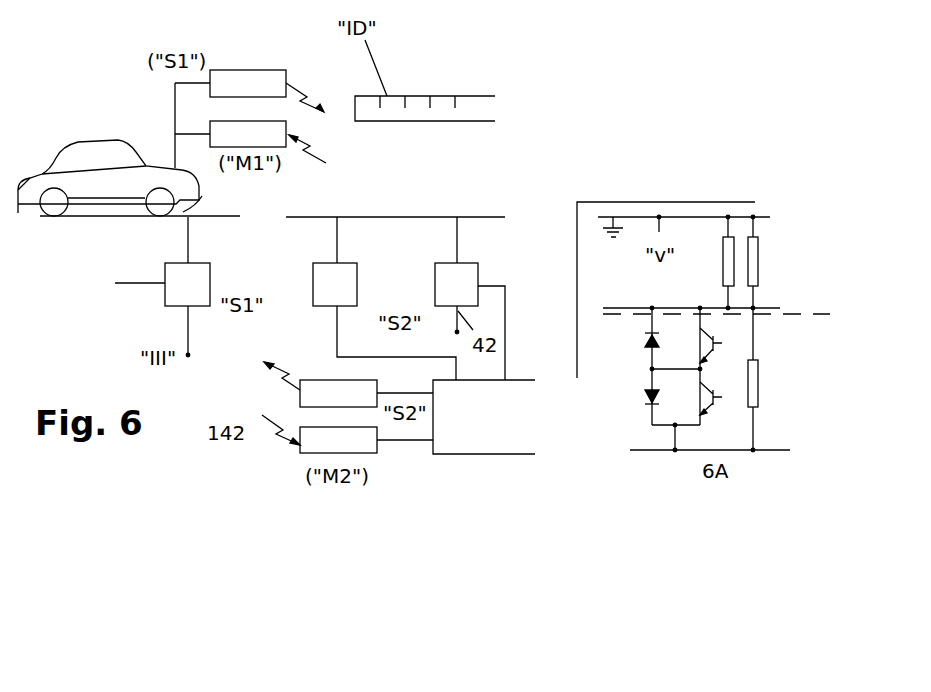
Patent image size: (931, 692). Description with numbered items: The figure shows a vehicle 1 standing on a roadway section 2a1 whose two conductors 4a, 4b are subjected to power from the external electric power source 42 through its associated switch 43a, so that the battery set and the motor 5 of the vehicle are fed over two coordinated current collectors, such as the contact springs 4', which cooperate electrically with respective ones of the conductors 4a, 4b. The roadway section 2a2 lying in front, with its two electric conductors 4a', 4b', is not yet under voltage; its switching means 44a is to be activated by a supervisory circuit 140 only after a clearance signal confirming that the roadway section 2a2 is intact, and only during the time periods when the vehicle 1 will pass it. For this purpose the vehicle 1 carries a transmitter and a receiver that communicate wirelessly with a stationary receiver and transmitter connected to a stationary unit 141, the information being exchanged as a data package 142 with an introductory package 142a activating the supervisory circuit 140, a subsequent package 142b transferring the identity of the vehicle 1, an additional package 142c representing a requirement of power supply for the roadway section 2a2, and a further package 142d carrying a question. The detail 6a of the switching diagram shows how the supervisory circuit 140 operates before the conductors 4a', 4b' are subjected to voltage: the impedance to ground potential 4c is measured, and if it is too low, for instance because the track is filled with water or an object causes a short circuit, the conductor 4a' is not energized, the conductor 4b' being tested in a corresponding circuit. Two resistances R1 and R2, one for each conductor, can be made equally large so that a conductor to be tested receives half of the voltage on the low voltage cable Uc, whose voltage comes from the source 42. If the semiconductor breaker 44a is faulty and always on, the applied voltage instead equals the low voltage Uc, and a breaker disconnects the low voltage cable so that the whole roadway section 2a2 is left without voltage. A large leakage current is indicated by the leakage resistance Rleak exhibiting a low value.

In FIG. 6, the vehicle 1 is at (136, 187).
In FIG. 6, the motor 5 is at (99, 195).
In FIG. 6, the conductor 4a is at (140, 230).
In FIG. 6, the conductor 4b is at (395, 205).
In FIG. 6, the contact spring 4' is at (232, 199).
In FIG. 6, the conductor 4a' is at (342, 205).
In FIG. 6A, the conductor 4a' is at (691, 294).
In FIG. 6A, the conductor 4b' is at (721, 332).
In FIG. 6, the roadway section 2a1 is at (64, 218).
In FIG. 6, the roadway section 2a2 is at (423, 219).
In FIG. 6, the switch 43a is at (184, 261).
In FIG. 6, the external electric power source 42 is at (204, 337).
In FIG. 6A, the external electric power source 42 is at (694, 461).
In FIG. 6, the supervisory circuit 140 is at (357, 287).
In FIG. 6A, the supervisory circuit 140 is at (628, 202).
In FIG. 6, the switching means 44a is at (480, 298).
In FIG. 6, the central controller 141 is at (503, 456).
In FIG. 6, the data package 142 is at (435, 97).
In FIG. 6, the introductory package 142a is at (362, 95).
In FIG. 6, the data package 142b is at (391, 113).
In FIG. 6, the data package 142c is at (421, 96).
In FIG. 6, the data package 142d is at (444, 96).
In FIG. 6A, the ground potential 4c is at (762, 216).
In FIG. 6A, the resistance R1 is at (770, 405).
In FIG. 6A, the resistance R2 is at (712, 262).
In FIG. 6A, the leakage resistance Rleak is at (788, 287).
In FIG. 6A, the low voltage cable Uc is at (775, 438).
In FIG. 6A, the circuit detail 6a is at (848, 419).